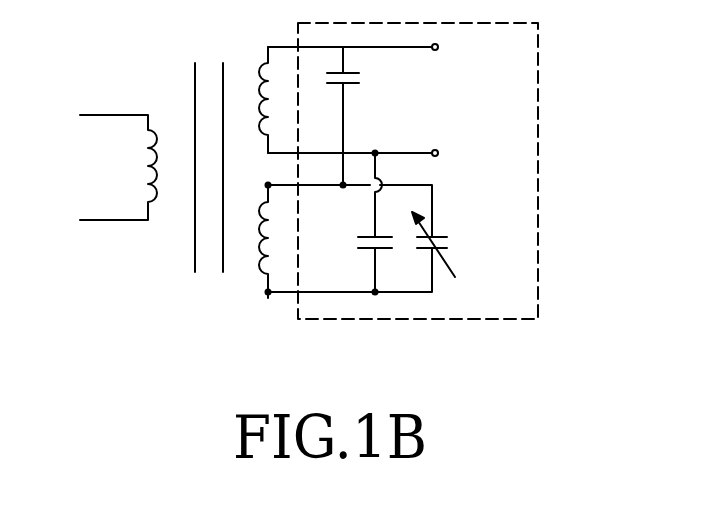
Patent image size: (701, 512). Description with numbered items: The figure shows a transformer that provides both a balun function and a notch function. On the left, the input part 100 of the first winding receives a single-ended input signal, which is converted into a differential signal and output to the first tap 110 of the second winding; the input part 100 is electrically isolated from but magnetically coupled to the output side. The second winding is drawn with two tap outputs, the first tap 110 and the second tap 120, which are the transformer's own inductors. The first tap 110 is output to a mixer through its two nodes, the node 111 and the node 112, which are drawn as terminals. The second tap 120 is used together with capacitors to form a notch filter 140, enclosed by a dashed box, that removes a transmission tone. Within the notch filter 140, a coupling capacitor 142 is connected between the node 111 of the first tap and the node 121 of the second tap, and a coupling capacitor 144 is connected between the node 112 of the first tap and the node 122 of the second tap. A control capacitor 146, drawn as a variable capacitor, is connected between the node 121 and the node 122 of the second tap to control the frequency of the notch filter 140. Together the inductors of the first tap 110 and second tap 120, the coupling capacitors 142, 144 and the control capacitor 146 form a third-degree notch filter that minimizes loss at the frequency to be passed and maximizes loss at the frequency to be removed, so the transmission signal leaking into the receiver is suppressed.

The input part 100 is at (157, 220).
The first tap 110 is at (262, 65).
The node of first tap 111 is at (440, 49).
The node of first tap 112 is at (440, 155).
The second tap 120 is at (263, 275).
The node of second tap 121 is at (268, 184).
The node of second tap 122 is at (268, 298).
The notch filter 140 is at (417, 319).
The coupling capacitor 142 is at (356, 85).
The coupling capacitor 144 is at (358, 249).
The control capacitor 146 is at (447, 249).